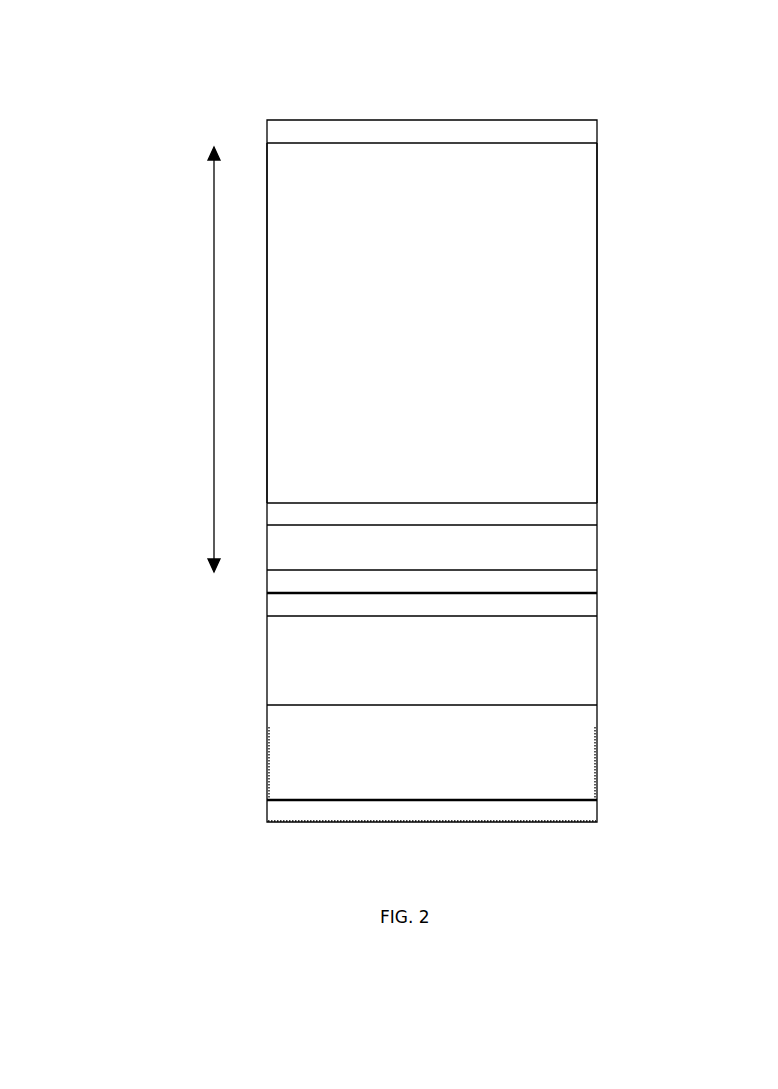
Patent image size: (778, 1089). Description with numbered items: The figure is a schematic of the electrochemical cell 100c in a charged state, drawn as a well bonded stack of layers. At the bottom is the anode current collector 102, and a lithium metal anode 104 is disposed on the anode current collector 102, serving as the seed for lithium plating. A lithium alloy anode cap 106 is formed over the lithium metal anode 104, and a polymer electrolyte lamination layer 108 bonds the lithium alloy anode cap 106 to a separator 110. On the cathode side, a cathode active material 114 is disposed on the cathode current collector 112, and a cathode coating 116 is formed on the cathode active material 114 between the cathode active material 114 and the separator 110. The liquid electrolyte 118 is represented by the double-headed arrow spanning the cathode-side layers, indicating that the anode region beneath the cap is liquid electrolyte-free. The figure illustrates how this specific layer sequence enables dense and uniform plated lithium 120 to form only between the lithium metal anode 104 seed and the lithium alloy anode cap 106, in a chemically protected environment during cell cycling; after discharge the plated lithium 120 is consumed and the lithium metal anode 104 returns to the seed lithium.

The electrochemical cell in a charged state 100c is at (122, 55).
The anode current collector 102 is at (590, 817).
The lithium metal anode 104 is at (587, 769).
The lithium alloy anode cap 106 is at (588, 610).
The polymer electrolyte lamination layer 108 is at (588, 583).
The separator 110 is at (588, 540).
The cathode current collector 112 is at (593, 134).
The cathode active material 114 is at (587, 311).
The cathode coating 116 is at (588, 514).
The liquid electrolyte 118 is at (214, 341).
The plated lithium 120 is at (587, 668).